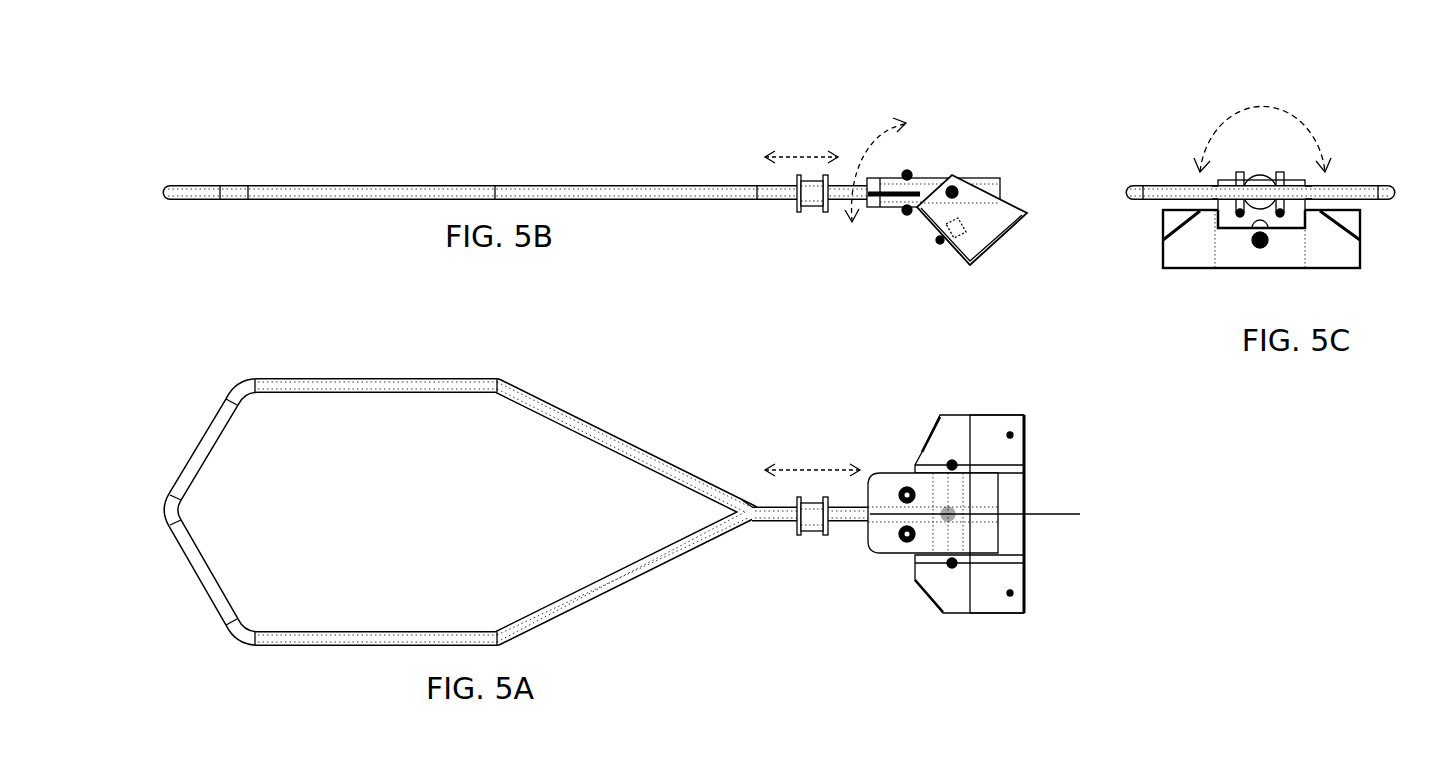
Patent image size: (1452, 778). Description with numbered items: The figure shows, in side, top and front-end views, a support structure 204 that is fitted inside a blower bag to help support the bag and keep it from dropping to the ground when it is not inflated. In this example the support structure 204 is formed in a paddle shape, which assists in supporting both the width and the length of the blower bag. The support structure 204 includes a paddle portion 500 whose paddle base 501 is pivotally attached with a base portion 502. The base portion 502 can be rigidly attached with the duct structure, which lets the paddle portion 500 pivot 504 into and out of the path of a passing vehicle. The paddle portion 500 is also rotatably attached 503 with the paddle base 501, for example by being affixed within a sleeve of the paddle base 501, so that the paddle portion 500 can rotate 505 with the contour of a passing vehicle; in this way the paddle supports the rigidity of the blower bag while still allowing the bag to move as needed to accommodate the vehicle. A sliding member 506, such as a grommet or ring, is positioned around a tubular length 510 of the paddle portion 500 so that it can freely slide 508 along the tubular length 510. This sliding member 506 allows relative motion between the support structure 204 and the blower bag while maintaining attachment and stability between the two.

In FIG. 5B, the support structure 204 is at (250, 41).
In FIG. 5B, the paddle portion 500 is at (568, 185).
In FIG. 5C, the paddle portion 500 is at (1380, 186).
In FIG. 5A, the paddle portion 500 is at (427, 384).
In FIG. 5B, the paddle base 501 is at (930, 177).
In FIG. 5C, the paddle base 501 is at (1261, 210).
In FIG. 5A, the paddle base 501 is at (883, 548).
In FIG. 5B, the base portion 502 is at (997, 214).
In FIG. 5C, the base portion 502 is at (1178, 254).
In FIG. 5A, the base portion 502 is at (990, 588).
In FIG. 5A, the rotatable attachment 503 is at (1080, 514).
In FIG. 5B, the pivot 504 is at (888, 124).
In FIG. 5C, the rotation 505 is at (1226, 113).
In FIG. 5B, the sliding member 506 is at (820, 207).
In FIG. 5A, the sliding member 506 is at (820, 537).
In FIG. 5B, the sliding motion 508 is at (817, 152).
In FIG. 5A, the sliding motion 508 is at (822, 468).
In FIG. 5B, the tubular length 510 is at (768, 200).
In FIG. 5A, the tubular length 510 is at (767, 518).